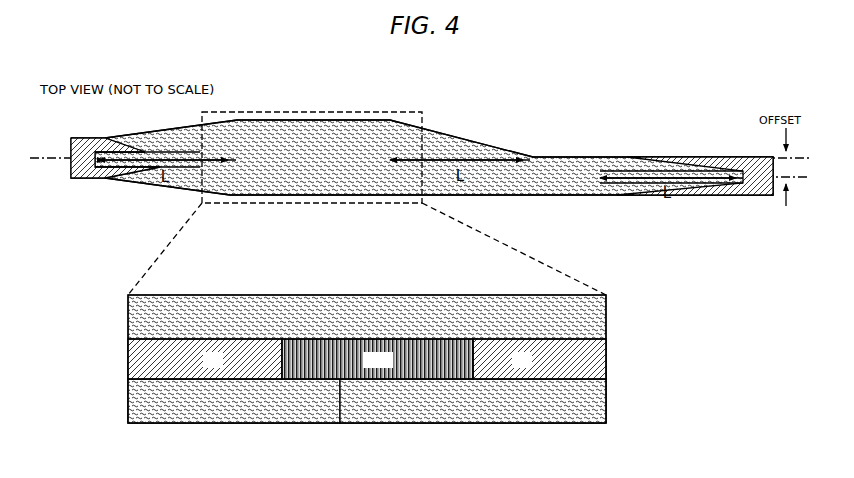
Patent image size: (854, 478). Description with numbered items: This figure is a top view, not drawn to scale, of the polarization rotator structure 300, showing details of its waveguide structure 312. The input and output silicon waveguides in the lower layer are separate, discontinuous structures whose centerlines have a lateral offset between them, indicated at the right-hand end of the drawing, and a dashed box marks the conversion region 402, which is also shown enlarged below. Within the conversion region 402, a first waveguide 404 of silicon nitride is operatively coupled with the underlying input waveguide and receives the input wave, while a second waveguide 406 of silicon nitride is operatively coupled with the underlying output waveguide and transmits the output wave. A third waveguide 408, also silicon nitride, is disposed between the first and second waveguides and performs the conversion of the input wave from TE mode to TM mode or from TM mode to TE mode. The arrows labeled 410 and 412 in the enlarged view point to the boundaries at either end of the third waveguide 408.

The polarization rotator structure 300 is at (524, 114).
The waveguide structure 312 is at (330, 196).
The conversion region 402 is at (412, 112).
The first waveguide 404 is at (193, 380).
The second waveguide 406 is at (545, 380).
The third waveguide 408 is at (348, 380).
The first interface 410 is at (285, 357).
The second interface 412 is at (472, 357).